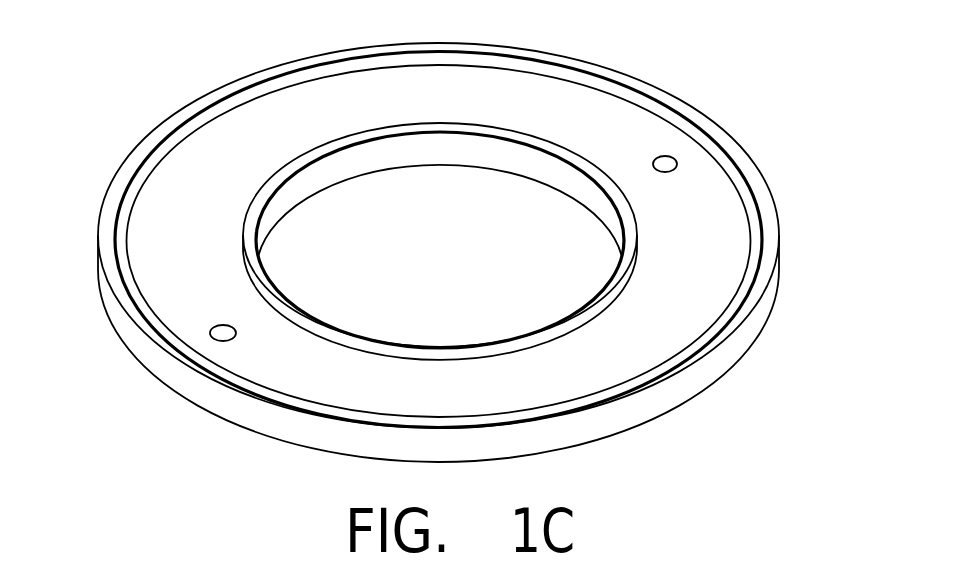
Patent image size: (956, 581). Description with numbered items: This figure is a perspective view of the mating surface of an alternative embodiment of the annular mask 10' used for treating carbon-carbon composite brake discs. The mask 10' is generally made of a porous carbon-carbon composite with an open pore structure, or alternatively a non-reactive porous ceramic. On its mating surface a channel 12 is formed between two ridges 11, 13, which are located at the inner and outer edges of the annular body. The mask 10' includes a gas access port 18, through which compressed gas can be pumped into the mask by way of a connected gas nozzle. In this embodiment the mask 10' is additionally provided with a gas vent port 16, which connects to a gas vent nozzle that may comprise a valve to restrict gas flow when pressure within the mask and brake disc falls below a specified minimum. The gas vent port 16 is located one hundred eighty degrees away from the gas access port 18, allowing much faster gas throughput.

The mask 10' is at (479, 353).
The ridge 11 is at (437, 125).
The channel 12 is at (193, 249).
The ridge 13 is at (160, 130).
The gas vent port 16 is at (214, 327).
The gas access port 18 is at (673, 158).